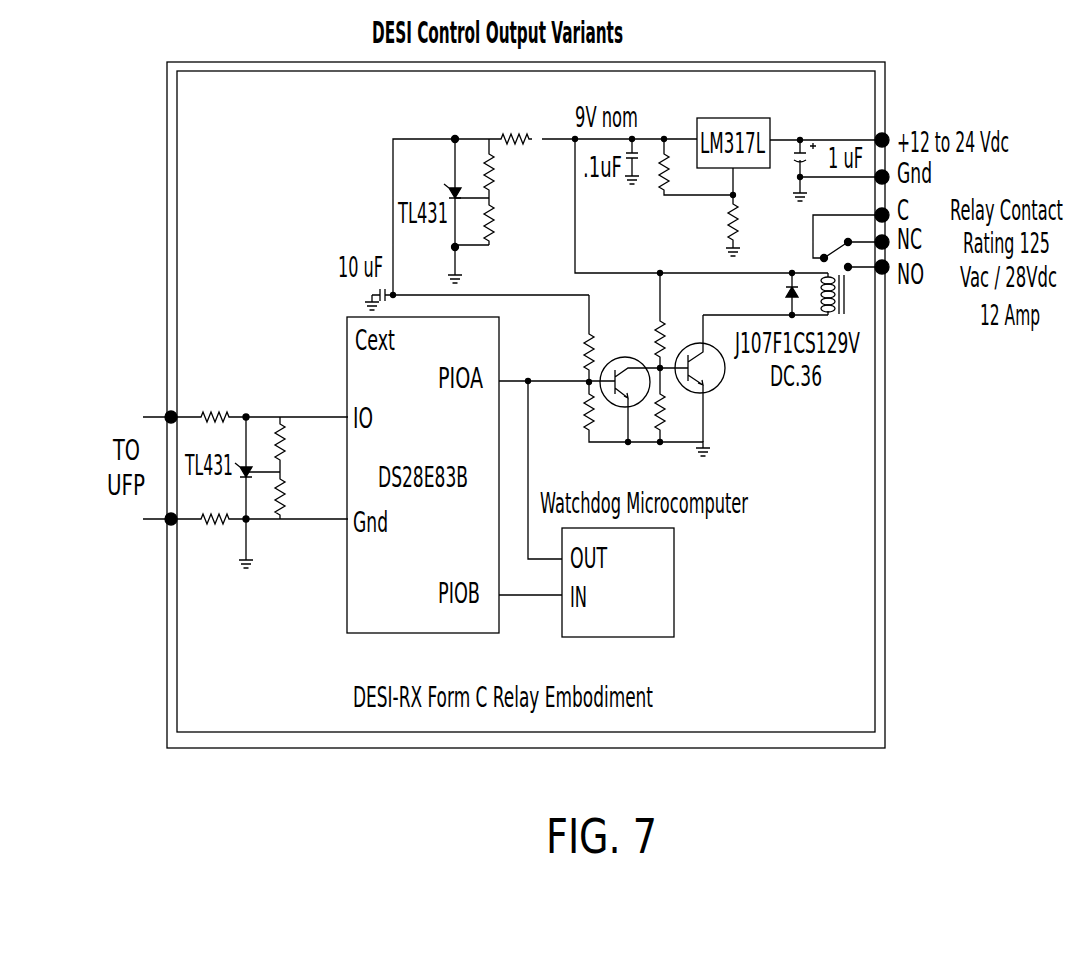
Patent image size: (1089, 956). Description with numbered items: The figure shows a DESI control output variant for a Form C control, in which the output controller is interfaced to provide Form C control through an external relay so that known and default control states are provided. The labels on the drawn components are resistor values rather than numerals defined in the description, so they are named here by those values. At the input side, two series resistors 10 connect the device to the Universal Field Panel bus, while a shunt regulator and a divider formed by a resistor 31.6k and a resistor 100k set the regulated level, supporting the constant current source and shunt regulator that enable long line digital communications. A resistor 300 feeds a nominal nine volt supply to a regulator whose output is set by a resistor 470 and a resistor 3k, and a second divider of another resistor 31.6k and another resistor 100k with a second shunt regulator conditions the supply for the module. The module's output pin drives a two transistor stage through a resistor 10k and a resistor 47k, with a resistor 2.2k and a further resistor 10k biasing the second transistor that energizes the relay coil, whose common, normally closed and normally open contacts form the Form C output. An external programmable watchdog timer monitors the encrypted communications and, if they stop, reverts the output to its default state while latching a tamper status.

The 10 ohm input series resistor 10 is at (215, 468).
The 300 ohm resistor 300 is at (515, 121).
The 470 ohm LM317L adjust resistor 470 is at (650, 184).
The 3k ohm resistor 3k is at (746, 222).
The 31.6k ohm divider resistor 31.6k is at (410, 308).
The 100k ohm divider resistor 100k is at (406, 360).
The 10k ohm resistor 10k is at (640, 378).
The 47k ohm resistor 47k is at (571, 412).
The 2.2k ohm resistor 2.2k is at (677, 322).